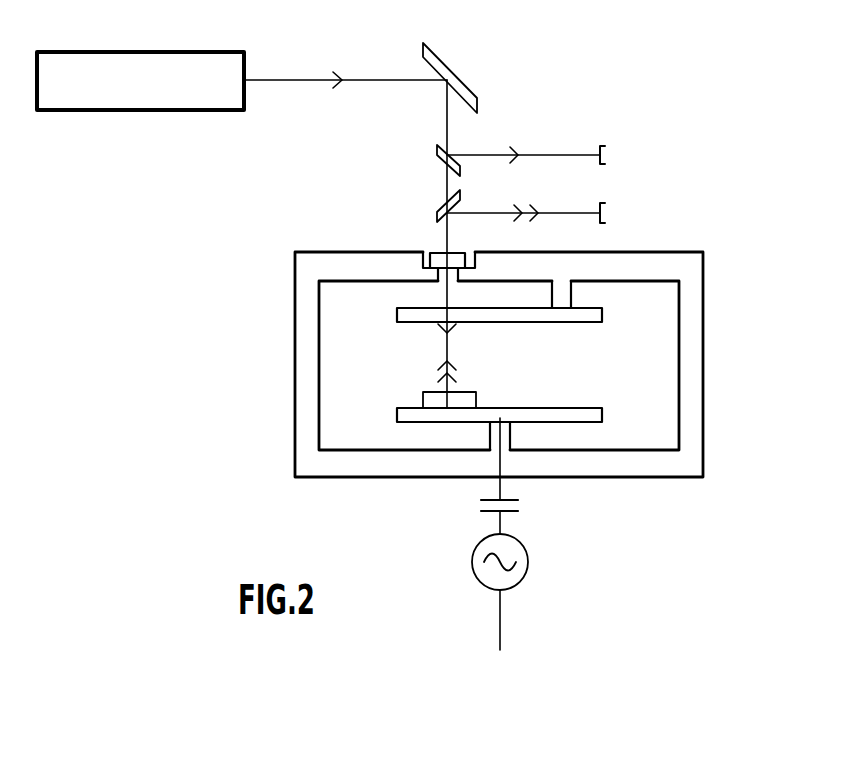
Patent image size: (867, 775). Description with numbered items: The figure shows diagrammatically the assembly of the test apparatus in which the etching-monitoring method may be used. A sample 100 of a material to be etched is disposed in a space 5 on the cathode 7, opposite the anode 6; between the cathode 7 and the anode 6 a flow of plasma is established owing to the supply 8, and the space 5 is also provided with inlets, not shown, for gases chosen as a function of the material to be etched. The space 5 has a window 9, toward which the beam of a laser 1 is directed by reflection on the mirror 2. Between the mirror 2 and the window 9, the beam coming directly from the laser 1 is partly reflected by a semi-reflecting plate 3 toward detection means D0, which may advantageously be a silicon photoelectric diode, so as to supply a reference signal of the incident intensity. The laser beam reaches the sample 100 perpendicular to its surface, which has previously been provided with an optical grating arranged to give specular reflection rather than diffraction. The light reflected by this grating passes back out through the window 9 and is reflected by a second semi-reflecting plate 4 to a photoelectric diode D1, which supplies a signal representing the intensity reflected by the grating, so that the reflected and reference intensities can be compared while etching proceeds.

The laser 1 is at (150, 67).
The mirror 2 is at (468, 74).
The semi-reflecting plate 3 is at (434, 157).
The semi-reflecting plate 4 is at (434, 204).
The detection means D0 is at (607, 158).
The photoelectric diode D1 is at (607, 212).
The space 5 is at (291, 332).
The window 9 is at (435, 249).
The anode 6 is at (602, 325).
The cathode 7 is at (606, 418).
The sample 100 is at (416, 401).
The supply 8 is at (529, 579).